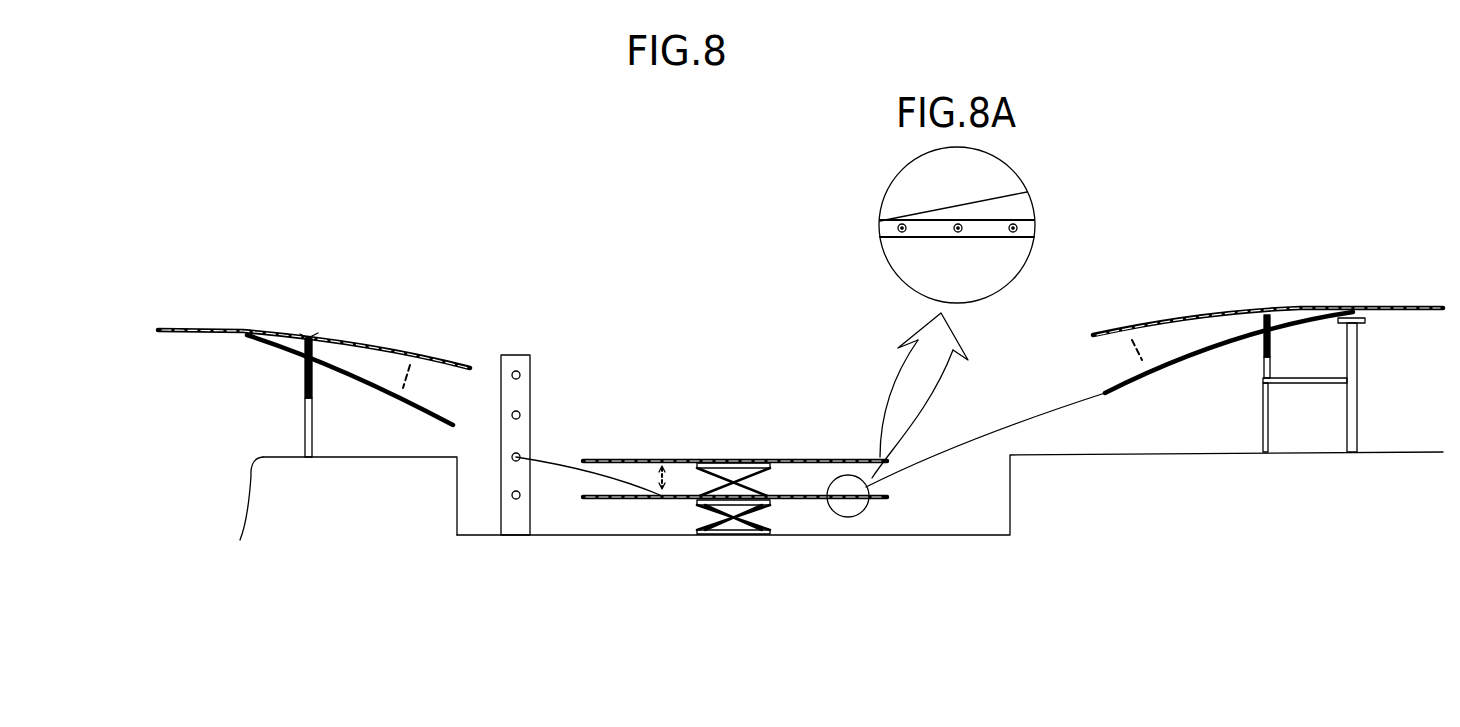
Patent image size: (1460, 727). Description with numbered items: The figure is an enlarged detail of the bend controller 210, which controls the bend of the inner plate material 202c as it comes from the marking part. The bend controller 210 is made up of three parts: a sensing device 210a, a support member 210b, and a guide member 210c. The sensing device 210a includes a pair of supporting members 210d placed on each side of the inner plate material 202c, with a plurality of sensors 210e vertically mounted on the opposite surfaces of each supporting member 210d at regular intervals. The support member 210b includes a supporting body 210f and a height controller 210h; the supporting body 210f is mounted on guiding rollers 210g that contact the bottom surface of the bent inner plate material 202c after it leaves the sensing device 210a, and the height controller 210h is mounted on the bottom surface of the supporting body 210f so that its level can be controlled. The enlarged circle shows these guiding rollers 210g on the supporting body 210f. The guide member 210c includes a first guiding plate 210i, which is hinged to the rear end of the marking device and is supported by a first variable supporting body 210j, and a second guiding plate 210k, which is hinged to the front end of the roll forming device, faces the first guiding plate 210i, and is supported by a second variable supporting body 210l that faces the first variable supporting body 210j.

In FIG. 8, the bend controller 210 is at (797, 507).
In FIG. 8, the sensing device 210a is at (472, 504).
In FIG. 8, the support member 210b is at (780, 557).
In FIG. 8, the guide member 210c is at (797, 480).
In FIG. 8, the supporting members 210d is at (515, 525).
In FIG. 8, the sensors 210e is at (516, 415).
In FIG. 8, the supporting body 210f is at (855, 500).
In FIG. 8A, the supporting body 210f is at (980, 232).
In FIG. 8, the rollers 210g is at (901, 534).
In FIG. 8A, the rollers 210g is at (1023, 235).
In FIG. 8, the height controller 210h is at (770, 530).
In FIG. 8, the first guiding plate 210i is at (407, 404).
In FIG. 8, the first variable supporting body 210j is at (240, 540).
In FIG. 8, the second guiding plate 210k is at (1113, 393).
In FIG. 8, the second variable supporting body 210l is at (1265, 362).
In FIG. 8, the inner plate material 202c is at (810, 488).